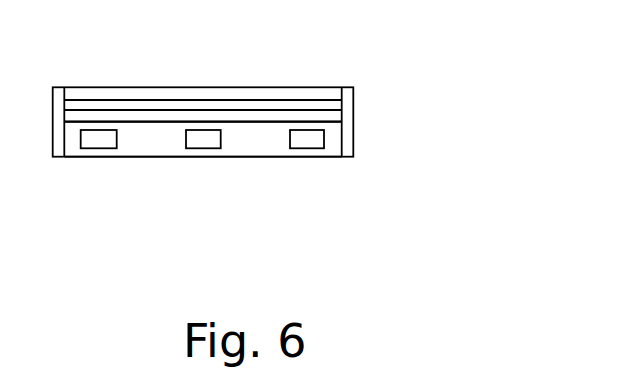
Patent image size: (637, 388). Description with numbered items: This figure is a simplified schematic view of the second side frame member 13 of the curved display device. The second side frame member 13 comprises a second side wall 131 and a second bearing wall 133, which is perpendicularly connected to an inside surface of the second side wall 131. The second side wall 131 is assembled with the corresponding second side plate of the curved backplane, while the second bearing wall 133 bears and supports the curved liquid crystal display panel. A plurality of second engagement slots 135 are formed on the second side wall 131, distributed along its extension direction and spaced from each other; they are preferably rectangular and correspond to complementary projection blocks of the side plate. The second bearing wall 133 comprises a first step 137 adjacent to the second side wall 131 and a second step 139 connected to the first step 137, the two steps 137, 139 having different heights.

The second side frame member 13 is at (152, 135).
The second side wall 131 is at (244, 140).
The second bearing wall 133 is at (455, 84).
The second engagement slots 135 is at (305, 140).
The first step 137 is at (317, 105).
The second step 139 is at (322, 116).